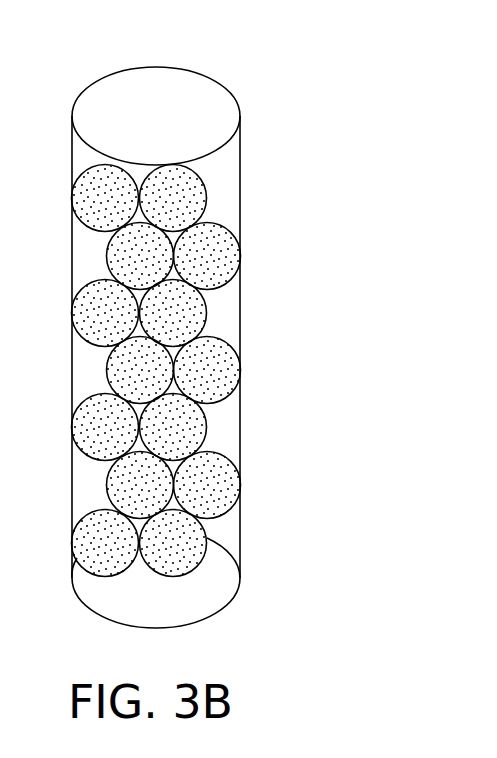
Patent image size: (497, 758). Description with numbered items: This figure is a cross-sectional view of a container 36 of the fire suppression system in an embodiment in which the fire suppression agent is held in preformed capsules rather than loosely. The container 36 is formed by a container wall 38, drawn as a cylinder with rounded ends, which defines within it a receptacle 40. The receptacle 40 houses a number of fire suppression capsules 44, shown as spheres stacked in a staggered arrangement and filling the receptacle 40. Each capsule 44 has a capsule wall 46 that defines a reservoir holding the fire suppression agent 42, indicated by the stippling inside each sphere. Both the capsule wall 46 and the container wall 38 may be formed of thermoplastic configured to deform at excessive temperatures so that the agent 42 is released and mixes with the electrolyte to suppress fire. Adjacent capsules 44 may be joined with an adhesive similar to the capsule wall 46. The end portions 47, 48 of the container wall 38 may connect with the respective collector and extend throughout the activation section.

The container 36 is at (198, 343).
The container wall 38 is at (241, 185).
The receptacle 40 is at (225, 307).
The fire suppression agent 42 is at (220, 245).
The fire suppression capsule 44 is at (217, 433).
The capsule wall 46 is at (230, 483).
The end portion 47 is at (234, 631).
The end portion 48 is at (210, 58).